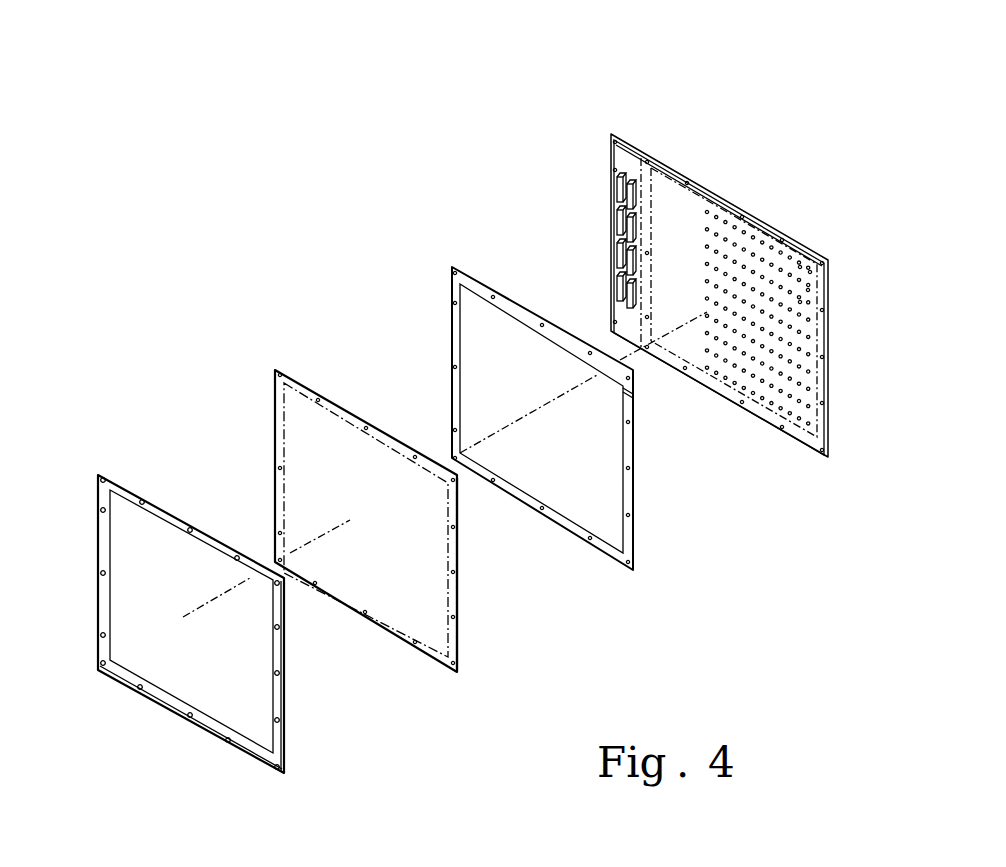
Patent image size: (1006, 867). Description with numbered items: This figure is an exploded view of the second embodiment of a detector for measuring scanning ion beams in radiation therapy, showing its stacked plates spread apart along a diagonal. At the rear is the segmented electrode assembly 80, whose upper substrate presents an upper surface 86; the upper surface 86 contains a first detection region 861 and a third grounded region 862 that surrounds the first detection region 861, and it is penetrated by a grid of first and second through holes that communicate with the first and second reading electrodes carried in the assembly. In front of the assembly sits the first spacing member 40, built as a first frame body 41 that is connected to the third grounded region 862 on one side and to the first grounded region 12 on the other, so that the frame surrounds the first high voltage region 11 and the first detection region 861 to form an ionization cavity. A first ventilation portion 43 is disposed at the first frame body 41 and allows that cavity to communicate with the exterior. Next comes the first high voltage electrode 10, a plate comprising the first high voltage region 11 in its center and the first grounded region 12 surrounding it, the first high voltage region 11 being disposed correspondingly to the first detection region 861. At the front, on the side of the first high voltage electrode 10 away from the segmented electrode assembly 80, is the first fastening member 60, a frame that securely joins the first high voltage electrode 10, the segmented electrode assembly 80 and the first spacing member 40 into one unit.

The first high voltage electrode 10 is at (378, 517).
The first high voltage region 11 is at (405, 613).
The first grounded region 12 is at (455, 602).
The first spacing member 40 is at (503, 373).
The first frame body 41 is at (477, 285).
The first ventilation portion 43 is at (625, 392).
The first fastening member 60 is at (158, 695).
The segmented electrode assembly 80 is at (752, 254).
The upper surface 86 is at (734, 249).
The first detection region 861 is at (673, 193).
The third grounded region 862 is at (734, 282).